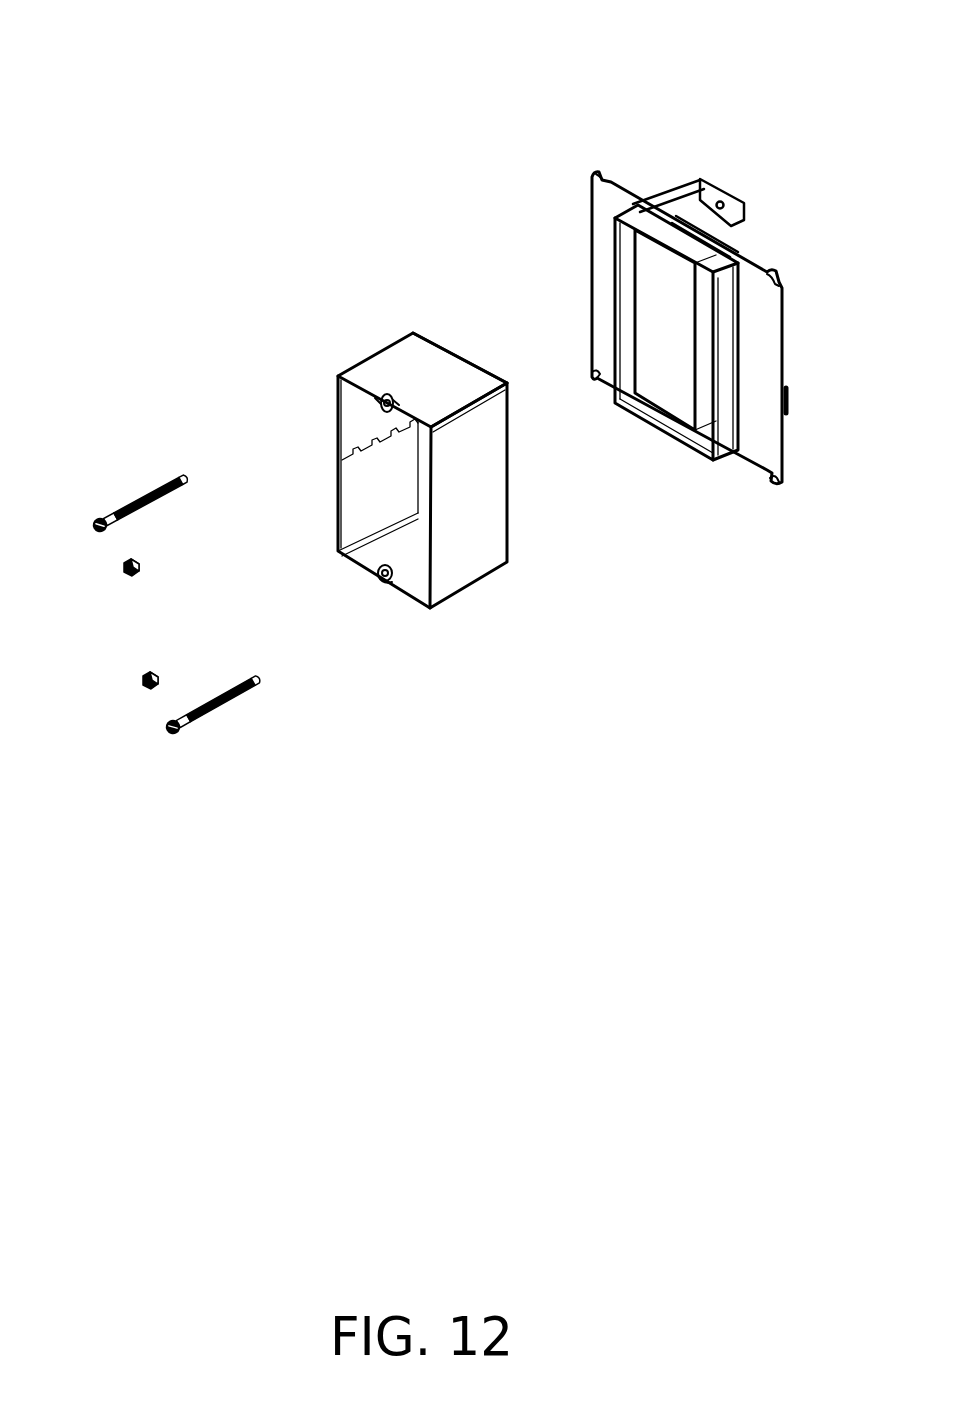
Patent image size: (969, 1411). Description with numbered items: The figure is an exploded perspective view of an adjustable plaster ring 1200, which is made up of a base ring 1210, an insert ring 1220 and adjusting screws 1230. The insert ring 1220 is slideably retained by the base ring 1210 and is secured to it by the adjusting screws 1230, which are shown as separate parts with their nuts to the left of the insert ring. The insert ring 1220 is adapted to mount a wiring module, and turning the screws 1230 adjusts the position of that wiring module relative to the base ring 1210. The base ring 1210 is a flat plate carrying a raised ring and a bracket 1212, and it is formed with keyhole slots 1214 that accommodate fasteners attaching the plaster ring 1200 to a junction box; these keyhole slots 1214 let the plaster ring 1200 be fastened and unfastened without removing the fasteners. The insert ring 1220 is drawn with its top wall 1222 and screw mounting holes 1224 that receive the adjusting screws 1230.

The adjustable plaster ring 1200 is at (374, 82).
The base ring 1210 is at (633, 188).
The mounting bracket 1212 is at (723, 192).
The keyhole slots 1214 is at (786, 296).
The insert ring 1220 is at (381, 350).
The box top wall 1222 is at (431, 342).
The screw mounting hole 1224 is at (380, 411).
The adjusting screws 1230 is at (160, 732).